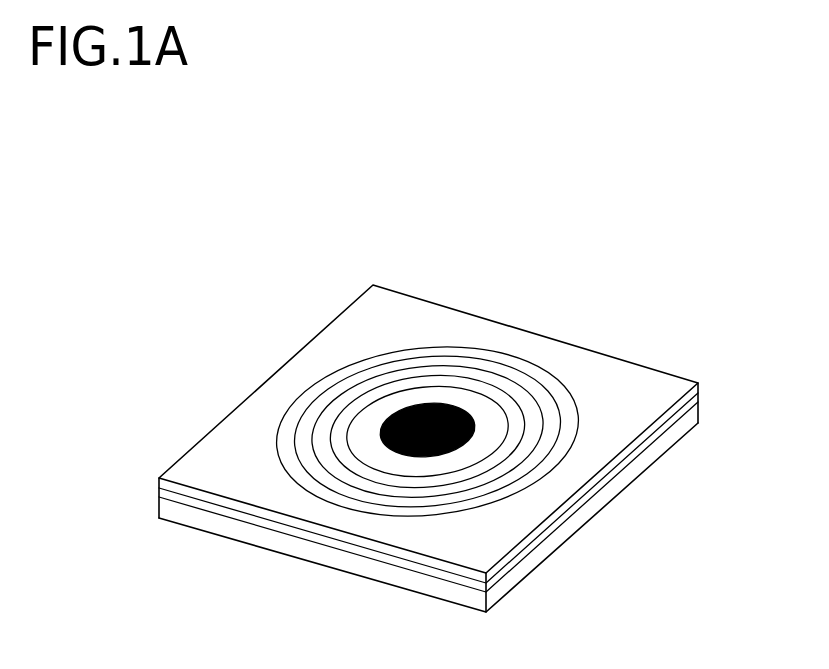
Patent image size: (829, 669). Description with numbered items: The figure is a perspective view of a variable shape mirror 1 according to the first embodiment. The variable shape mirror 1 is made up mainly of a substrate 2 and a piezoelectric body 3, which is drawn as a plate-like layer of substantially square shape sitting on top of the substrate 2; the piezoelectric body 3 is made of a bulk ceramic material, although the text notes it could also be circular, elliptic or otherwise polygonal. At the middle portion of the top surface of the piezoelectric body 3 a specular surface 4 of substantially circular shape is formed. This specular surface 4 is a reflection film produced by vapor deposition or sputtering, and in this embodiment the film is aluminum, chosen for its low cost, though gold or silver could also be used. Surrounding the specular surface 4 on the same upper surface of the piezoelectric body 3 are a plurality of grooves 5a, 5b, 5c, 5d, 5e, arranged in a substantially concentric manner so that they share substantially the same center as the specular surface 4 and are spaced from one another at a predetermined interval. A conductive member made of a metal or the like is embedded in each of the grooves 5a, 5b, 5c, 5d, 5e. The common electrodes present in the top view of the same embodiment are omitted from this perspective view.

The variable shape mirror 1 is at (742, 300).
The substrate 2 is at (534, 556).
The piezoelectric body 3 is at (583, 481).
The specular surface 4 is at (397, 410).
The groove 5a is at (429, 387).
The groove 5b is at (465, 379).
The groove 5c is at (500, 376).
The groove 5d is at (554, 400).
The groove 5e is at (580, 412).